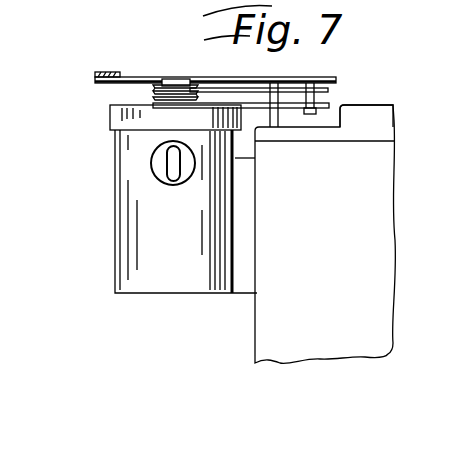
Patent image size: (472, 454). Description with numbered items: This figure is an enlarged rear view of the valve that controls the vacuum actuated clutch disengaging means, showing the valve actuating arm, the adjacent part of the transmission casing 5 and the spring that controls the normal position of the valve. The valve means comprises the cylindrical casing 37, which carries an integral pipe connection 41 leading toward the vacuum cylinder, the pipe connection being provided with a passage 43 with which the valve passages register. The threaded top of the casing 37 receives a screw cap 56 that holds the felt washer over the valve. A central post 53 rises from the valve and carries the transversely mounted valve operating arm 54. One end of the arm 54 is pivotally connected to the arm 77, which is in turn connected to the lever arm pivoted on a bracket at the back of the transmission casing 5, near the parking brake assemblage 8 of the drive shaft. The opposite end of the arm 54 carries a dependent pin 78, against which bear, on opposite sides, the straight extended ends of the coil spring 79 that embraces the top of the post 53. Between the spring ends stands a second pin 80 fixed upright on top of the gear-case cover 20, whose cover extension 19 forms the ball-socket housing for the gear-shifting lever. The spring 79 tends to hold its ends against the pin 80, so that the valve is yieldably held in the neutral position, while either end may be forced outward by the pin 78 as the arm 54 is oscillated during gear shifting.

The transmission casing 5 is at (262, 337).
The parking brake assemblage 8 is at (95, 82).
The cover extension 19 is at (377, 118).
The gear-case cover 20 is at (375, 138).
The cylindrical casing of valve means 37 is at (124, 224).
The pipe connection 41 is at (153, 157).
The passage 43 is at (170, 171).
The central post 53 is at (173, 80).
The valve operating arm 54 is at (219, 83).
The screw cap 56 is at (114, 124).
The arm 77 is at (108, 68).
The dependent pin 78 is at (312, 114).
The coil spring 79 is at (152, 88).
The second pin 80 is at (276, 118).